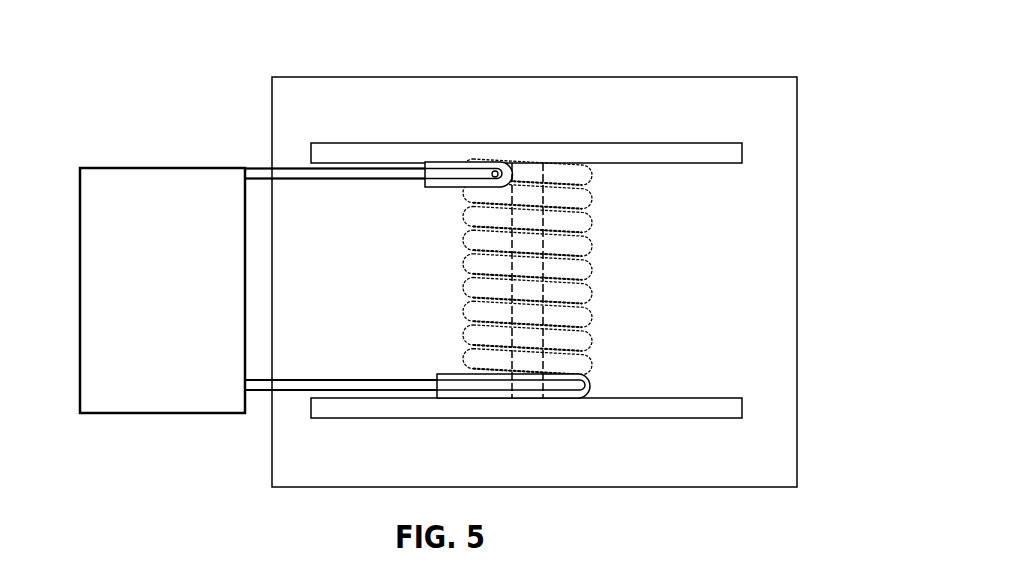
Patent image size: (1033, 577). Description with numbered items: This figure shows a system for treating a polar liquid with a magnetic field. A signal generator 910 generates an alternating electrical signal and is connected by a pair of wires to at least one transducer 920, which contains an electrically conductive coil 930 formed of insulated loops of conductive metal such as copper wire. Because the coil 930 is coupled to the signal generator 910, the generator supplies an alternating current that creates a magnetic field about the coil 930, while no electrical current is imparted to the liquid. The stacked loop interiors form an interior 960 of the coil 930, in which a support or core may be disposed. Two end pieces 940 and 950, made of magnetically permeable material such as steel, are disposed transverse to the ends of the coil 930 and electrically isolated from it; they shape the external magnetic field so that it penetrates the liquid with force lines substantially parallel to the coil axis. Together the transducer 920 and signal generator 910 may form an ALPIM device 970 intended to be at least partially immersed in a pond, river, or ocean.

The signal generator 910 is at (148, 260).
The transducer 920 is at (771, 105).
The electrically conductive coil 930 is at (587, 272).
The end piece 940 is at (682, 163).
The end piece 950 is at (657, 421).
The interior of the coil 960 is at (524, 188).
The ALPIM device 970 is at (622, 40).